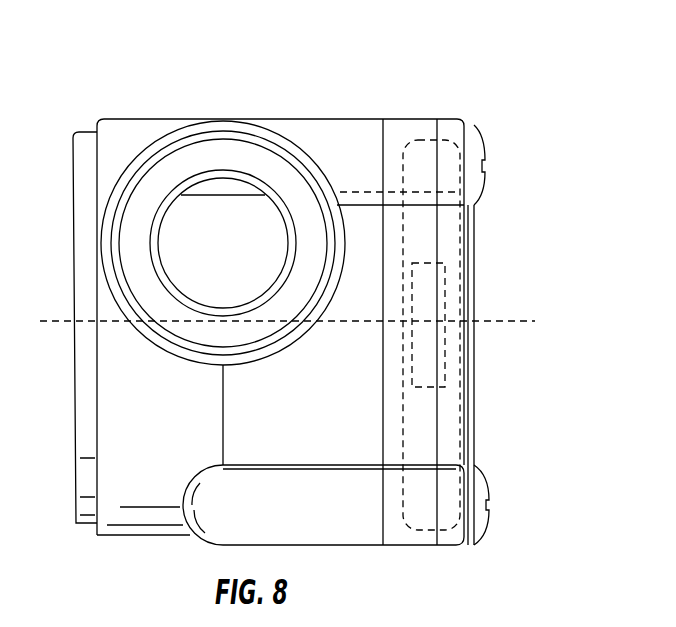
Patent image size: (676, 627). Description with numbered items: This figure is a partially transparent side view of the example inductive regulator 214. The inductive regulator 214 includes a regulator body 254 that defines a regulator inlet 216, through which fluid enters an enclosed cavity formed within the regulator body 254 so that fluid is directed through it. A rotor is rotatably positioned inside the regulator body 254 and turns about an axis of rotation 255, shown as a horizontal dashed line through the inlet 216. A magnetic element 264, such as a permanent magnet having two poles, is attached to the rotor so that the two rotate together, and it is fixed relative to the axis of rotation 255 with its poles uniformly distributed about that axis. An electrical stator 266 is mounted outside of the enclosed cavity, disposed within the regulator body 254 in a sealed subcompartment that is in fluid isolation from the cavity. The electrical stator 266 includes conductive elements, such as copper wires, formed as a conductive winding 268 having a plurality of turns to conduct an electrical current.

The inductive regulator 214 is at (424, 88).
The regulator inlet 216 is at (200, 240).
The regulator body 254 is at (140, 437).
The axis of rotation 255 is at (53, 320).
The magnetic element 264 is at (445, 388).
The electrical stator 266 is at (463, 240).
The conductive winding 268 is at (403, 440).